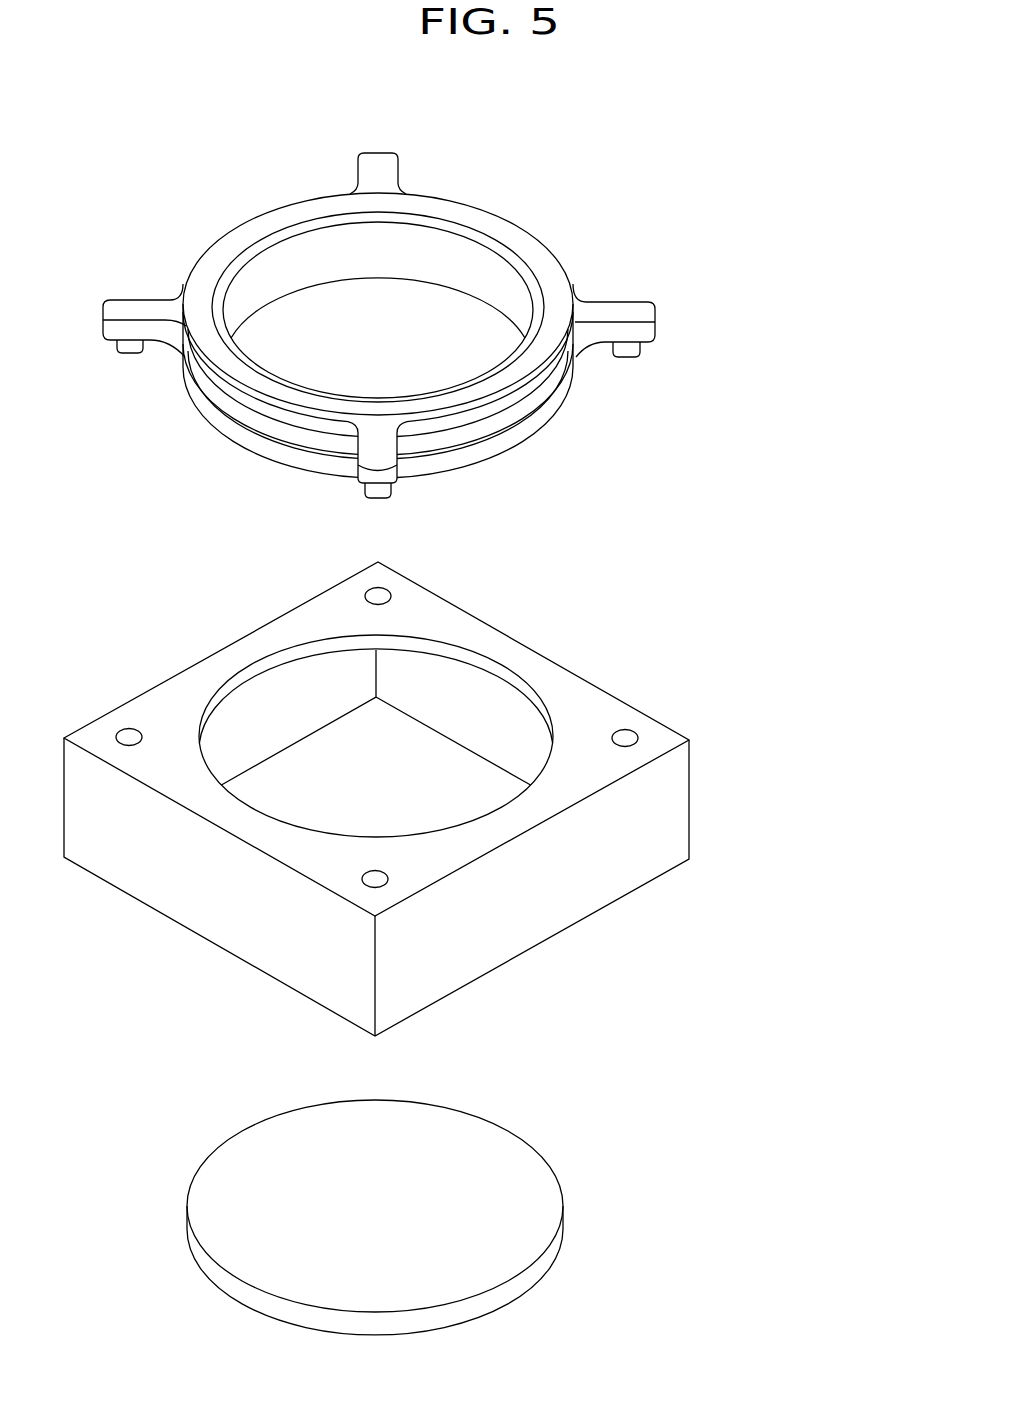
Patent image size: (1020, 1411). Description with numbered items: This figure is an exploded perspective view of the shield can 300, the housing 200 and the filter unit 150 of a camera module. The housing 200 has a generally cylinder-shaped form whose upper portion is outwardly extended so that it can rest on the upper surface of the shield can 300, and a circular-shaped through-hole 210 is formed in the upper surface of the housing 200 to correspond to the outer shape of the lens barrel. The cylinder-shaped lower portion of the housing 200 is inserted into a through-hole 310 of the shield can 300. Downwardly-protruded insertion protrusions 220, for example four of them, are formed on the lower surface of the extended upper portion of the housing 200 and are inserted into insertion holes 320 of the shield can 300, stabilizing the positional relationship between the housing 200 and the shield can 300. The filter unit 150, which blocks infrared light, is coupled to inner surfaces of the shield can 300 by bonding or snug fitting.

The filter unit 150 is at (547, 1267).
The housing 200 is at (472, 299).
The through-hole 210 is at (347, 323).
The insertion protrusion 220 is at (655, 356).
The shield can 300 is at (470, 783).
The through-hole 310 is at (353, 752).
The insertion hole 320 is at (628, 733).